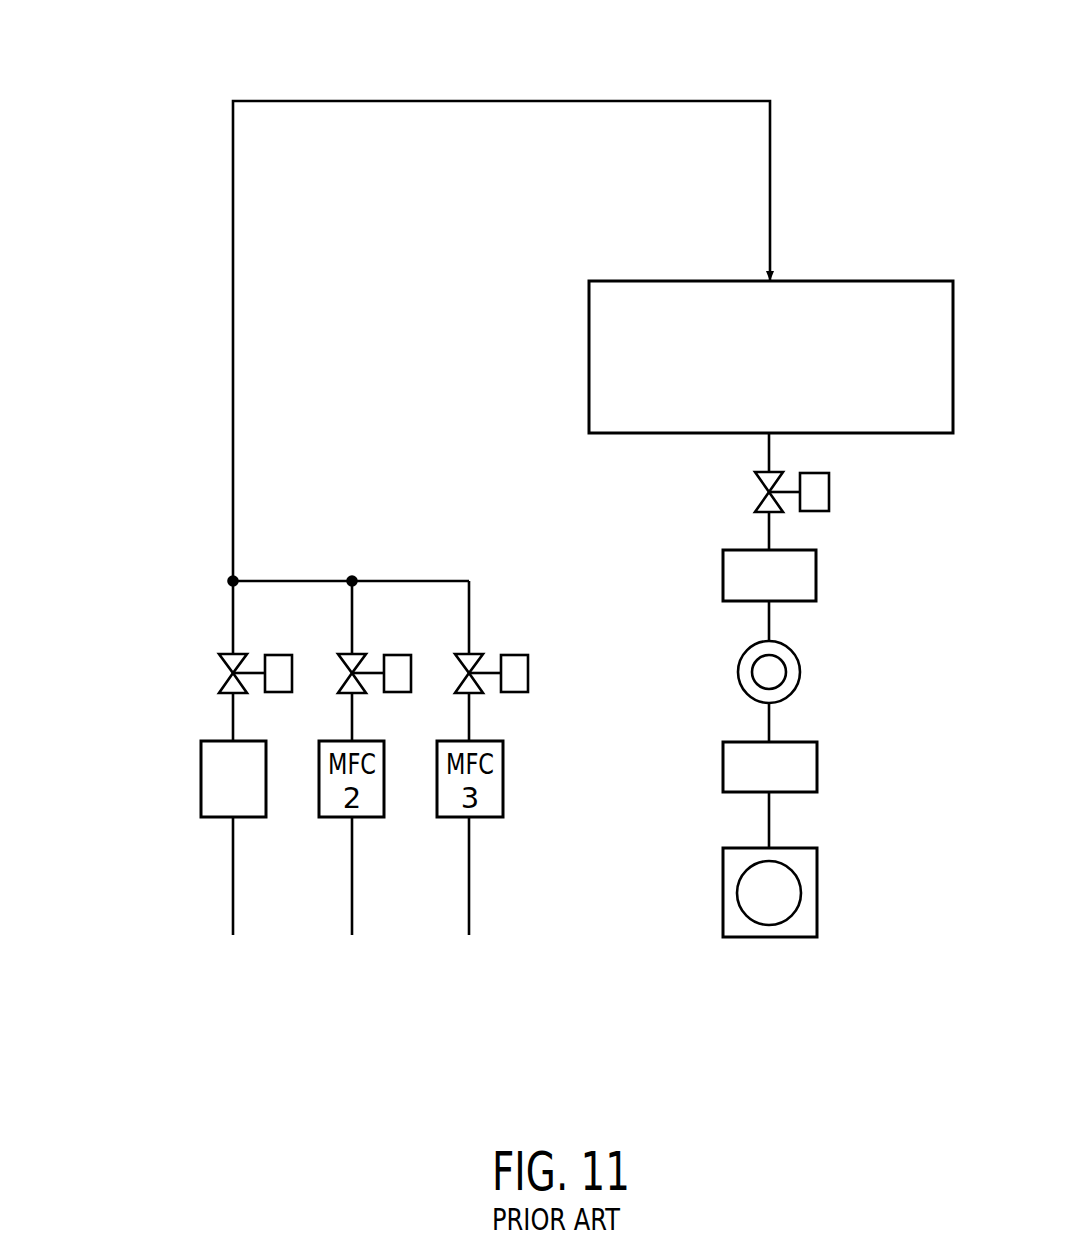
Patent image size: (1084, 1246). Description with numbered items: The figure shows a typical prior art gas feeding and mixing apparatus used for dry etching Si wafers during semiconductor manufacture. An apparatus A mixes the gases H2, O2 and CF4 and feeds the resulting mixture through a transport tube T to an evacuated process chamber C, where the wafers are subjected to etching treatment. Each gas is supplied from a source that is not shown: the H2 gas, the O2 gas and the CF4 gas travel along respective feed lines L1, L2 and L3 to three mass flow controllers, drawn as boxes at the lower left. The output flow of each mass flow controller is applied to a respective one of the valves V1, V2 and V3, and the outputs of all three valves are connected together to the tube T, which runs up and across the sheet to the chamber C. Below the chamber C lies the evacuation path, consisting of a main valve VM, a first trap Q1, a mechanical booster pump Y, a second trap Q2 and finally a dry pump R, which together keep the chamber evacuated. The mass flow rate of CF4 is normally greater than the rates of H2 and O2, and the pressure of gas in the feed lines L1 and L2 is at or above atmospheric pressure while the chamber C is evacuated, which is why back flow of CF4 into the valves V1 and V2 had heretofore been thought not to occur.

The transport tube T is at (697, 99).
The process chamber C is at (648, 279).
The main valve VM is at (830, 491).
The trap Q1 is at (817, 572).
The mechanical booster pump Y is at (800, 669).
The trap Q2 is at (817, 765).
The dry pump R is at (818, 890).
The valve V1 is at (238, 662).
The valve V2 is at (357, 662).
The valve V3 is at (474, 662).
The apparatus A is at (196, 806).
The feed line L1 is at (233, 855).
The feed line L2 is at (352, 860).
The feed line L3 is at (469, 853).
The hydrogen gas H2 is at (234, 965).
The oxygen gas O2 is at (353, 965).
The carbon tetrafluoride gas CF4 is at (471, 965).